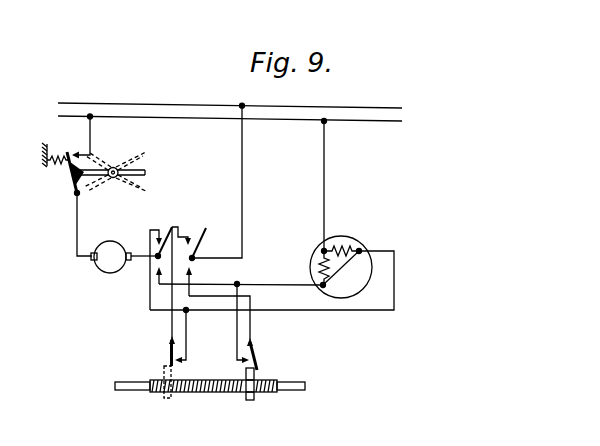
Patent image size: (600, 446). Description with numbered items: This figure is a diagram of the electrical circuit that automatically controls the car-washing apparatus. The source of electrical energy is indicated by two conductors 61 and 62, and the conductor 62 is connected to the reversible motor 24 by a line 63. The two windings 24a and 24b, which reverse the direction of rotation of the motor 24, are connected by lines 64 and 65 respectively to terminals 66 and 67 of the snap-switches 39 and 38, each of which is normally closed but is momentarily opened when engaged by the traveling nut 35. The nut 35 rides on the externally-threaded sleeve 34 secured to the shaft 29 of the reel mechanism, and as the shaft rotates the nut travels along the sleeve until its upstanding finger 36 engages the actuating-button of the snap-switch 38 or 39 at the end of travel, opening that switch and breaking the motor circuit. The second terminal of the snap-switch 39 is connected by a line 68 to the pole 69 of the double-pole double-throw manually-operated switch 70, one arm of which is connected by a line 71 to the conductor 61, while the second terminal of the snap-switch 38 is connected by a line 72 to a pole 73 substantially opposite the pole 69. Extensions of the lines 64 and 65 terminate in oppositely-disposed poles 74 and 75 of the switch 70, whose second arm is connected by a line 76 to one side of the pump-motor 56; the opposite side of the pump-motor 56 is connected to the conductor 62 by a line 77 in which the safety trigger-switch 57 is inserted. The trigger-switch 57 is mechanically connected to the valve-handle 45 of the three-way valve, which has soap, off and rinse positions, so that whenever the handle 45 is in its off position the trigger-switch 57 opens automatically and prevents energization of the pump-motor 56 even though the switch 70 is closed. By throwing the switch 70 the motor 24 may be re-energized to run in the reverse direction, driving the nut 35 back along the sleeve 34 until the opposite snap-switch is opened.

The reversible motor 24 is at (337, 252).
The motor winding 24a is at (318, 262).
The motor winding 24b is at (340, 248).
The shaft 29 is at (130, 392).
The externally-threaded sleeve 34 is at (210, 393).
The traveling nut 35 is at (250, 400).
The upstanding finger 36 is at (246, 372).
The snap-switch 38 is at (167, 352).
The snap-switch 39 is at (258, 357).
The valve-handle 45 is at (143, 168).
The pump-motor 56 is at (108, 242).
The safety trigger-switch 57 is at (64, 176).
The conductor 61 is at (372, 107).
The conductor 62 is at (373, 122).
The line 63 is at (326, 166).
The line 64 is at (283, 284).
The line 65 is at (392, 312).
The terminal 66 is at (240, 361).
The terminal 67 is at (186, 363).
The line 68 is at (252, 324).
The pole 69 is at (195, 268).
The double-pole double-throw manually-operated switch 70 is at (206, 227).
The line 71 is at (243, 218).
The line 72 is at (170, 325).
The pole 73 is at (190, 227).
The pole 74 is at (152, 272).
The pole 75 is at (154, 238).
The line 76 is at (127, 262).
The line 77 is at (75, 245).